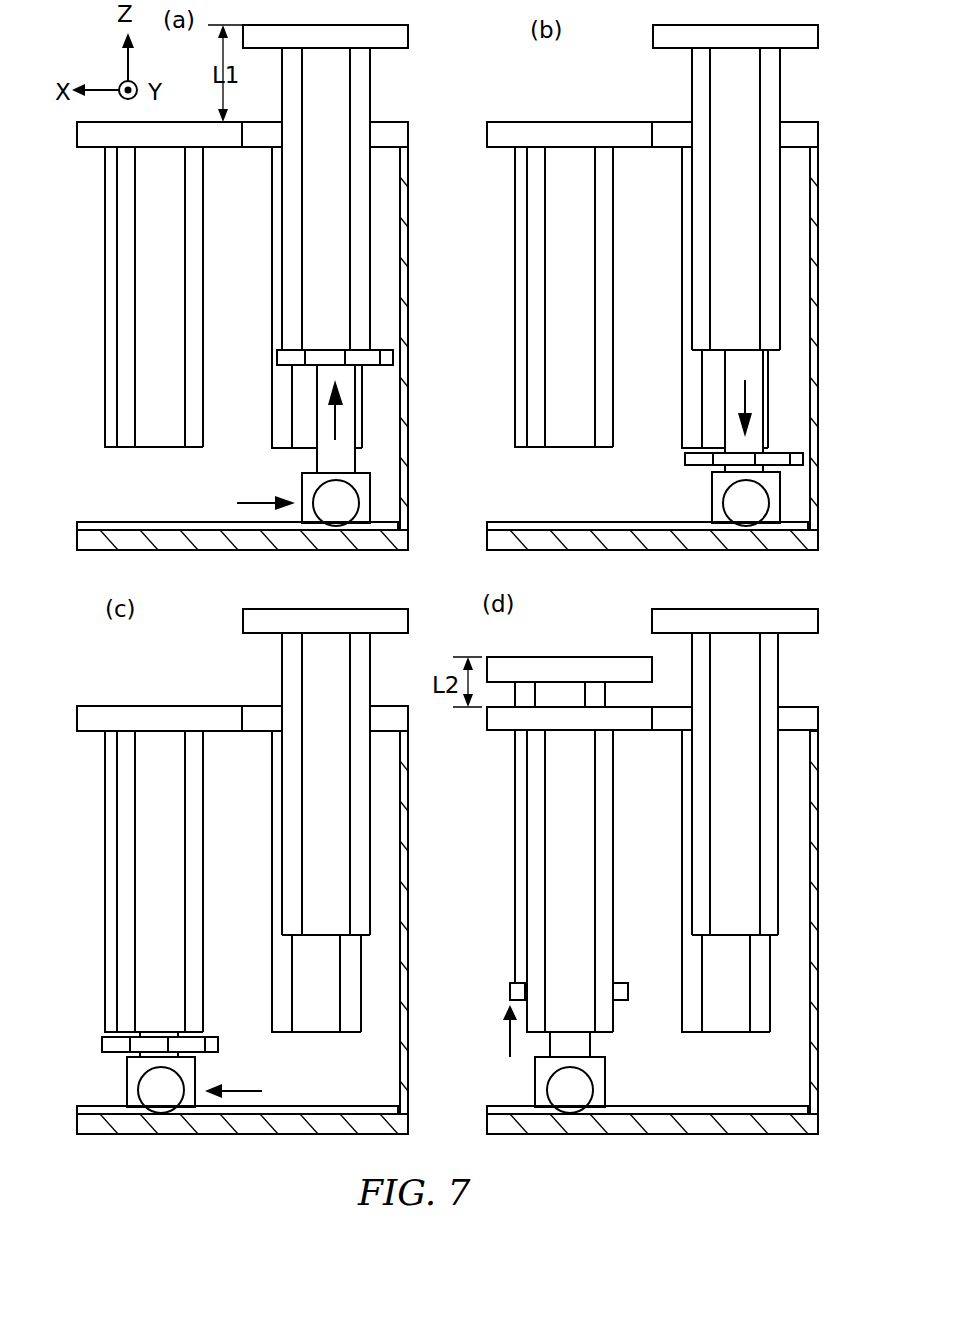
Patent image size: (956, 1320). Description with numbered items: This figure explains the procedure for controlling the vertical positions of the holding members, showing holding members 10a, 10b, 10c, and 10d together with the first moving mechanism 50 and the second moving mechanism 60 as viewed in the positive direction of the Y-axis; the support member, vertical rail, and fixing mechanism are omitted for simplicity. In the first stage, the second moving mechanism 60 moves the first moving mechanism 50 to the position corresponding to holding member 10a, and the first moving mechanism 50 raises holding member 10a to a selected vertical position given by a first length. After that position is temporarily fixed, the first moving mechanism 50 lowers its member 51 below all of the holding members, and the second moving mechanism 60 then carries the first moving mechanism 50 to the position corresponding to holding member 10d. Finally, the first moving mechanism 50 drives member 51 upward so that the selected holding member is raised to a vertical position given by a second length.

The holding member 10a is at (372, 96).
The holding member 10b is at (277, 323).
The holding member 10c is at (203, 245).
The holding member 10d is at (112, 211).
The first moving mechanism 50 is at (294, 424).
The member 51 is at (697, 462).
The second moving mechanism 60 is at (320, 501).